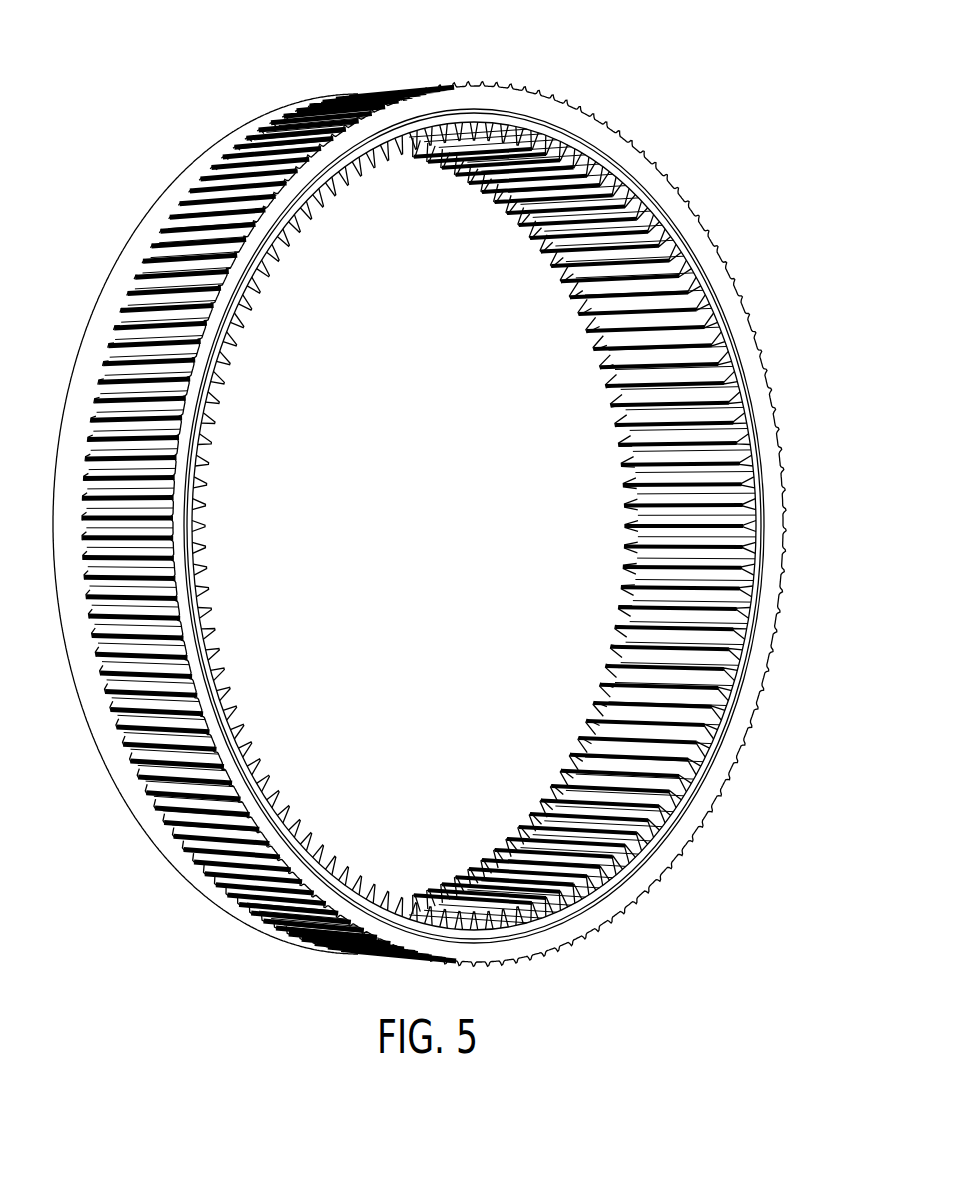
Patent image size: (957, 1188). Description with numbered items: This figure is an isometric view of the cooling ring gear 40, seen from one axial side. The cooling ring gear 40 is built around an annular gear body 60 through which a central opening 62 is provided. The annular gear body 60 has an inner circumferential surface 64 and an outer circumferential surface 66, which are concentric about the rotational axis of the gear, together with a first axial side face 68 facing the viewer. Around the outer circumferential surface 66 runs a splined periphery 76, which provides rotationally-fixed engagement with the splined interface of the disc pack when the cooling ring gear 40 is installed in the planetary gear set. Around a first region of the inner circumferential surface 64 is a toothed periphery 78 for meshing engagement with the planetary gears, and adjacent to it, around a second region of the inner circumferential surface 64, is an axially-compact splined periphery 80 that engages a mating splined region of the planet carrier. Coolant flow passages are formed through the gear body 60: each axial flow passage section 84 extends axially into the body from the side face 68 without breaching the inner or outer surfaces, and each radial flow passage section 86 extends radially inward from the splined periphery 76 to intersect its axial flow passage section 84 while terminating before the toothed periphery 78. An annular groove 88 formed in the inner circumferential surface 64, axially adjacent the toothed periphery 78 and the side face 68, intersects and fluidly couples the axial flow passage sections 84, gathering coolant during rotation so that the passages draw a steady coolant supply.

The cooling ring gear 40 is at (180, 92).
The annular gear body 60 is at (544, 102).
The central opening 62 is at (428, 536).
The inner circumferential surface 64 is at (707, 517).
The outer circumferential surface 66 is at (331, 96).
The first axial side face 68 is at (472, 106).
The splined periphery 76 is at (122, 310).
The toothed periphery 78 is at (708, 325).
The splined periphery 80 is at (620, 428).
The axial flow passage section 84 is at (469, 140).
The radial flow passage section 86 is at (228, 161).
The annular groove 88 is at (767, 573).